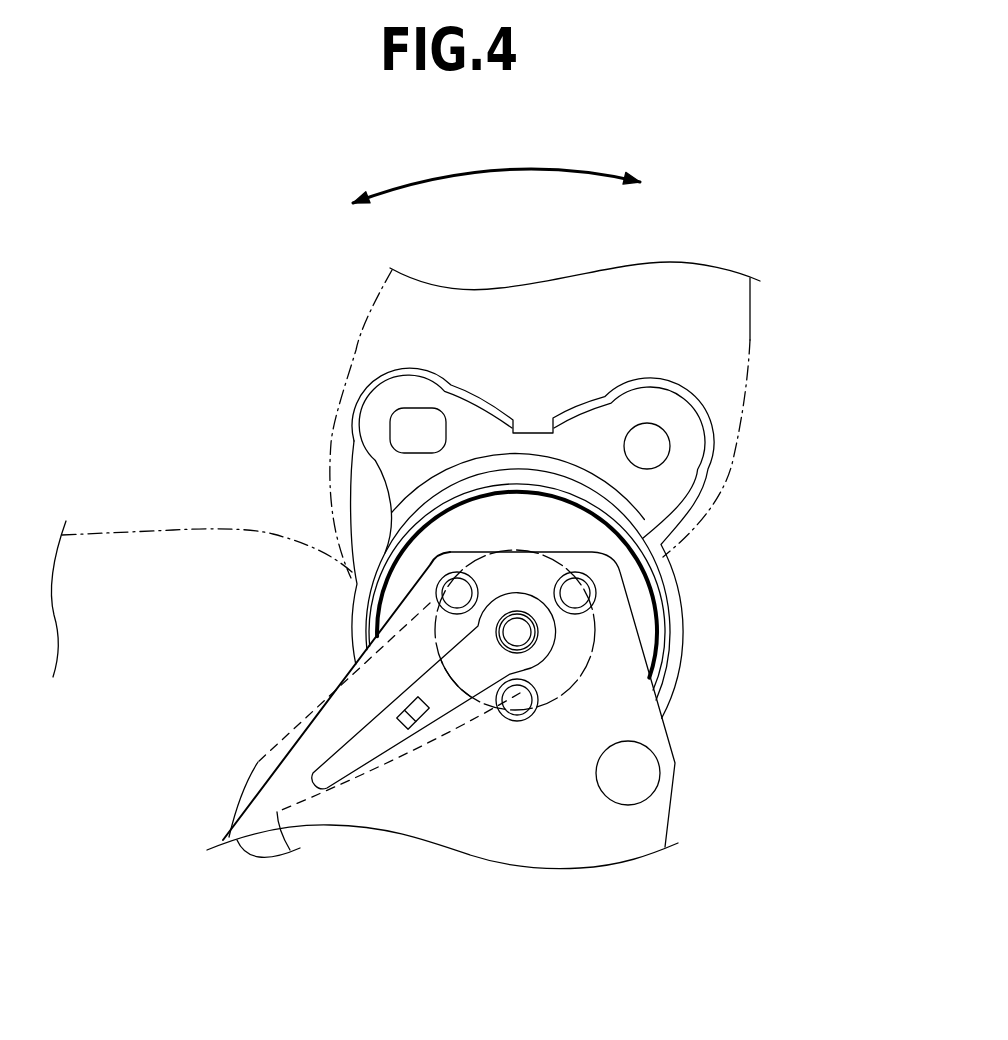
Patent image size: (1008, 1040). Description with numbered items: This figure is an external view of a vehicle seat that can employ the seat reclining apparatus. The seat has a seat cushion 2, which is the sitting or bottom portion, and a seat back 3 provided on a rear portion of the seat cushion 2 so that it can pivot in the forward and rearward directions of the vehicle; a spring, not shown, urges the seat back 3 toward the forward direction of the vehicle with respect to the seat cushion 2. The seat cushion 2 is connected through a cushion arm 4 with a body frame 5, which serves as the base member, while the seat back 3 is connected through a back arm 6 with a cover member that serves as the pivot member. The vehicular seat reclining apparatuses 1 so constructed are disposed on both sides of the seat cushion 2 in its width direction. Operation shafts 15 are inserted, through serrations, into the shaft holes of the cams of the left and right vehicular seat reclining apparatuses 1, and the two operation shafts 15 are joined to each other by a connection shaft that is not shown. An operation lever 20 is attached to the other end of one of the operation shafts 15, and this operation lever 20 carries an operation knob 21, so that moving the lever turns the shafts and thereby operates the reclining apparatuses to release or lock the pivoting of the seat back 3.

The vehicular seat reclining apparatus 1 is at (598, 450).
The seat cushion 2 is at (173, 530).
The seat back 3 is at (750, 338).
The cushion arm 4 is at (669, 733).
The body frame 5 is at (629, 587).
The back arm 6 is at (720, 422).
The operation shaft 15 is at (523, 633).
The operation lever 20 is at (363, 720).
The operation knob 21 is at (260, 770).